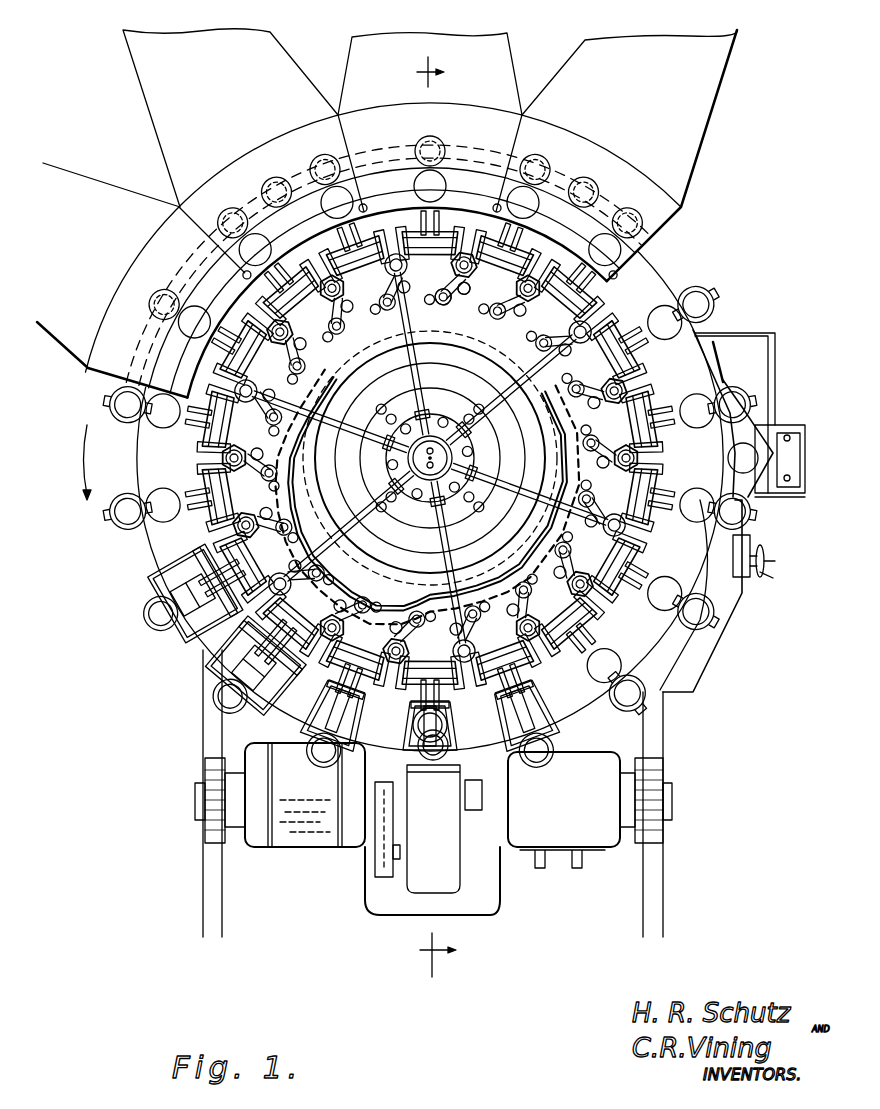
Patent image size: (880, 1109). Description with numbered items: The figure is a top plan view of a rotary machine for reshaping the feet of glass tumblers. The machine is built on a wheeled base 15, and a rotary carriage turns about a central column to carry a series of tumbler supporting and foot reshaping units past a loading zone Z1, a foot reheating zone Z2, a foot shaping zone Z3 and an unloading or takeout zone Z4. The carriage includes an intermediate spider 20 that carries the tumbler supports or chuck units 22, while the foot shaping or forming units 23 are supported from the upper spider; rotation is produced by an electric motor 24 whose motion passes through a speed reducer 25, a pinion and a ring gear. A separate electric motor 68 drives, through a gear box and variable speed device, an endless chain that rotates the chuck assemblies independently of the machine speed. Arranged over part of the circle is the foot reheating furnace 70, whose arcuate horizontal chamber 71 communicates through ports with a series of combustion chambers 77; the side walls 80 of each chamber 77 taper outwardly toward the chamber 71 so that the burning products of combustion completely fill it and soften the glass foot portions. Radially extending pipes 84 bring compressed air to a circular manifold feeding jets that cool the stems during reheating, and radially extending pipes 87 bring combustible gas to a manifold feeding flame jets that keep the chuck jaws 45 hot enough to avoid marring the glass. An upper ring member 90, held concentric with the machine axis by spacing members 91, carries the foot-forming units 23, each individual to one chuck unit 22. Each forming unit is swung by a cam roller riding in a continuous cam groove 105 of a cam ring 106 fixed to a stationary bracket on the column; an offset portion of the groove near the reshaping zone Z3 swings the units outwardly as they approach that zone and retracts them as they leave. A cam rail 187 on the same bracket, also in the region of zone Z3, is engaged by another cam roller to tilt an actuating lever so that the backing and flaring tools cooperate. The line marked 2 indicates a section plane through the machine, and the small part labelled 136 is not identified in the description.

The section line 2- 2 is at (427, 515).
The wheeled base 15 is at (600, 845).
The intermediate spider 20 is at (142, 272).
The tumbler supports 22 is at (139, 470).
The foot shaping or forming units 23 is at (430, 432).
The electric motor 24 is at (312, 840).
The speed reducer 25 is at (428, 811).
The chuck jaws 45 is at (678, 498).
The electric motor 68 is at (735, 595).
The foot reheating furnace 70 is at (384, 248).
The arcuate horizontal chamber 71 is at (78, 350).
The combustion chambers 77 is at (190, 152).
The side walls 80 is at (548, 98).
The radially extending pipes 84 is at (430, 458).
The radially extending pipes 87 is at (430, 458).
The upper ring member 90 is at (430, 458).
The spacing members 91 is at (432, 335).
The continuous cam groove 105 is at (430, 458).
The cam ring 106 is at (430, 458).
The link roller 136 is at (457, 302).
The cam rail 187 is at (427, 477).
The loading zone Z1 is at (732, 511).
The foot reheating zone Z2 is at (359, 163).
The foot shaping zone Z3 is at (348, 655).
The unloading or takeout zone Z4 is at (734, 564).